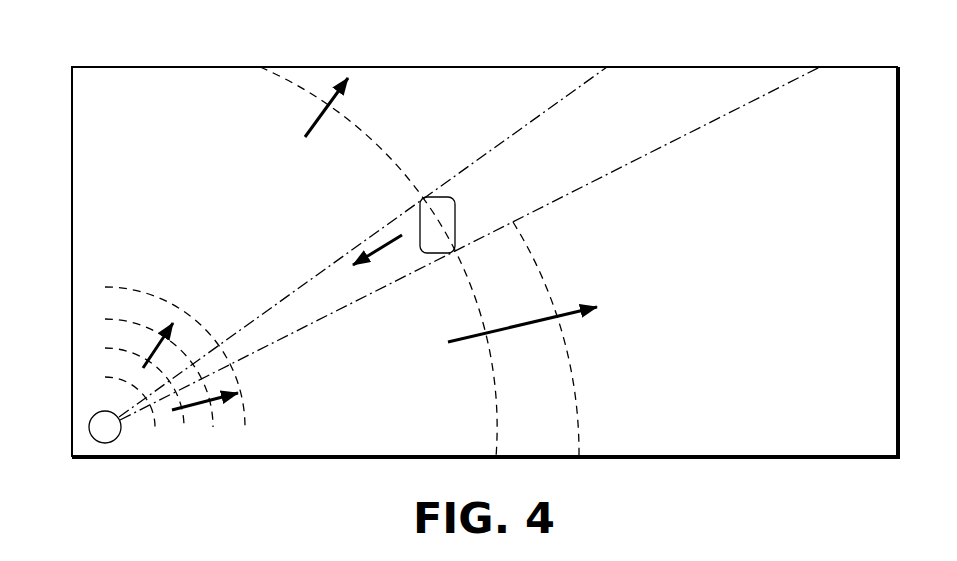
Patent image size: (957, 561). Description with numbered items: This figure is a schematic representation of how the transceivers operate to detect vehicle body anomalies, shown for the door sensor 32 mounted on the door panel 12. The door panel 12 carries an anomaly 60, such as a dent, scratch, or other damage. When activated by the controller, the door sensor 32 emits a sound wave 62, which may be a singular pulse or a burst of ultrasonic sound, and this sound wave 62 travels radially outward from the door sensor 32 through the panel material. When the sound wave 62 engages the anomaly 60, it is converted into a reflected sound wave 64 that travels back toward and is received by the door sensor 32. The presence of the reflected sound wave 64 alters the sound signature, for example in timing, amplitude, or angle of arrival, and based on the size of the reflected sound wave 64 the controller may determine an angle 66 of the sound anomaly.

The door panel 12 is at (533, 67).
The door sensor 32 is at (89, 427).
The anomaly 60 is at (455, 217).
The sound wave 62 is at (352, 122).
The reflected sound wave 64 is at (413, 270).
The angle 66 is at (740, 108).